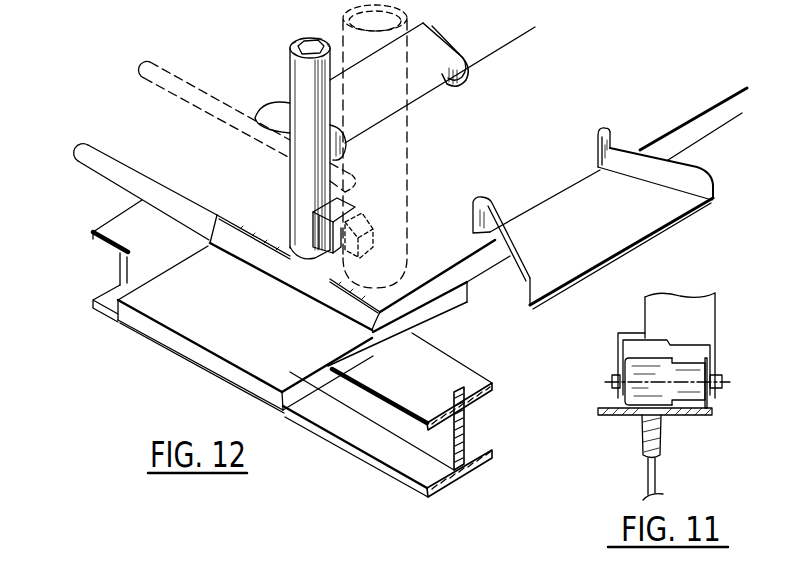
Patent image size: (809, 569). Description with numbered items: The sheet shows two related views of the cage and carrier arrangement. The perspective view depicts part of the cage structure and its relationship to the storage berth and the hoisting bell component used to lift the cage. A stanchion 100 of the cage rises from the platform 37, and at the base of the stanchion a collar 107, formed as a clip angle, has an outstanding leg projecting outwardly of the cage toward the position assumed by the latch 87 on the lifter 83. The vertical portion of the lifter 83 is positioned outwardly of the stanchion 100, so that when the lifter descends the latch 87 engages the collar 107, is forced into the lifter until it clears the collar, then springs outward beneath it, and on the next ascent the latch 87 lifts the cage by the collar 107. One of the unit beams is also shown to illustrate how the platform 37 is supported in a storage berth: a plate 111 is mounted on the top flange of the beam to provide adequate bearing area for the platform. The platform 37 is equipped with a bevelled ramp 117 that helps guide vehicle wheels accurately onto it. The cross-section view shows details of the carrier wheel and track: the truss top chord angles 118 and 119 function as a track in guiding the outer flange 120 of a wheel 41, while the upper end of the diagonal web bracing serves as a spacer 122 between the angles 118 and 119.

In FIG. 12, the platform 37 is at (670, 123).
In FIG. 12, the lifter 83 is at (408, 166).
In FIG. 12, the latch 87 is at (370, 230).
In FIG. 12, the stanchion 100 is at (290, 194).
In FIG. 12, the collar 107 is at (313, 214).
In FIG. 12, the plate 111 is at (253, 365).
In FIG. 12, the bevelled ramp 117 is at (640, 226).
In FIG. 11, the wheel 41 is at (633, 373).
In FIG. 11, the top chord angle 118 is at (622, 418).
In FIG. 11, the top chord angle 119 is at (677, 418).
In FIG. 11, the outer flange 120 is at (708, 408).
In FIG. 11, the spacer 122 is at (650, 470).